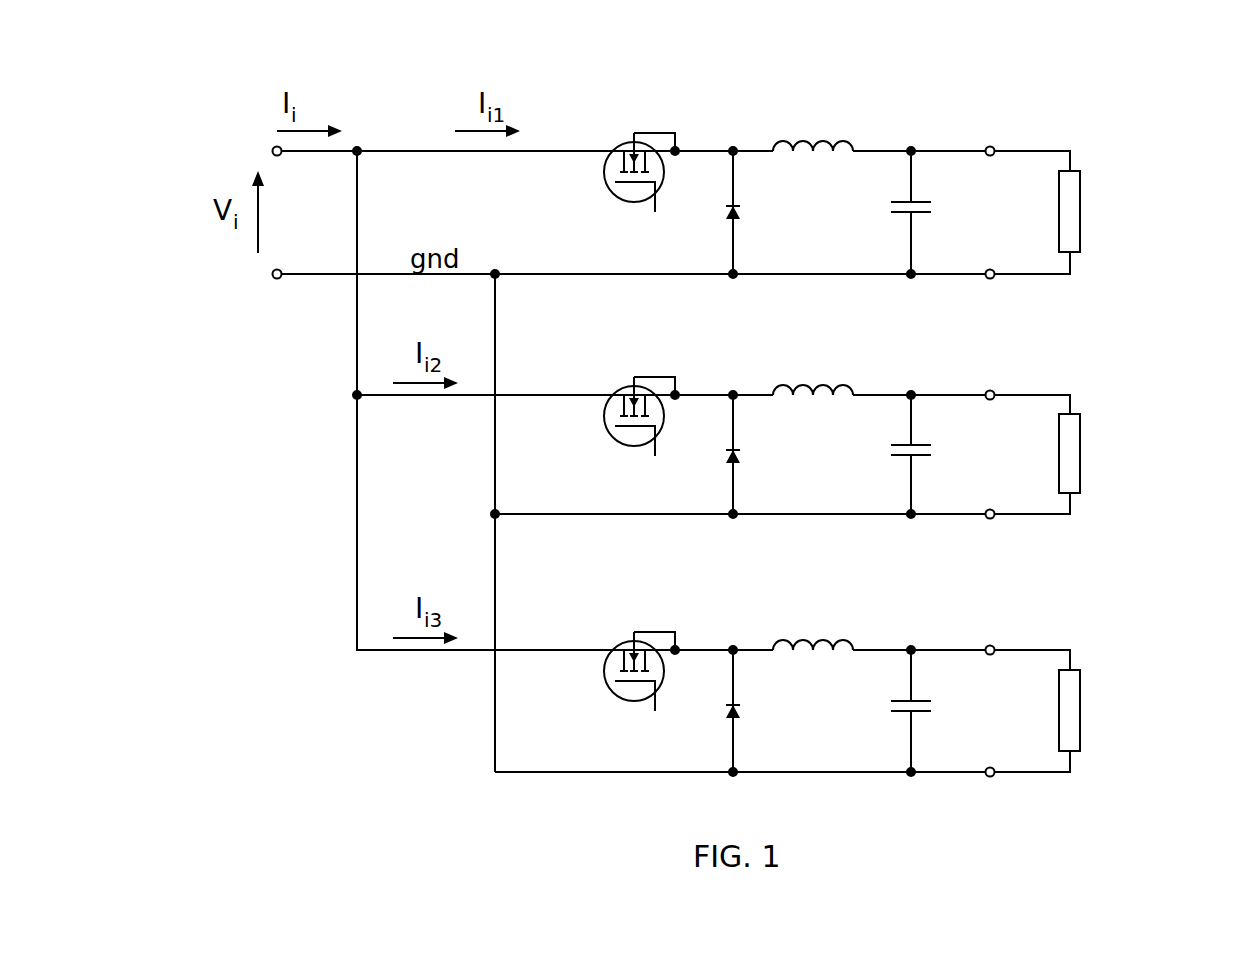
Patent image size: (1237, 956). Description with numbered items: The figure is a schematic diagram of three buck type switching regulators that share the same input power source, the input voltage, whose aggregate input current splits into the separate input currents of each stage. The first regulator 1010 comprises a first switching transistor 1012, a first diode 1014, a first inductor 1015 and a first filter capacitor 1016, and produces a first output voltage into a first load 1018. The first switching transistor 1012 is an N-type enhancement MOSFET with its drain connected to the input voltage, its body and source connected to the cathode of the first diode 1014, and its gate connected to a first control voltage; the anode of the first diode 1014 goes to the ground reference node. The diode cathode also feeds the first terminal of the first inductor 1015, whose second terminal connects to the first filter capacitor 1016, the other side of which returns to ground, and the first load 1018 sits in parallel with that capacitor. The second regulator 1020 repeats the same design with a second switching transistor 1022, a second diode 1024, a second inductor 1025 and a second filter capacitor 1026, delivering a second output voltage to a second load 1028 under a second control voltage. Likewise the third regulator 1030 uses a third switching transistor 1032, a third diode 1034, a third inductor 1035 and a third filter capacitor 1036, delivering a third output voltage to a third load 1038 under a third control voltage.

The first regulator 1010 is at (984, 80).
The switching transistor S1 1012 is at (616, 129).
The diode 1014 is at (742, 212).
The inductor L1 1015 is at (851, 131).
The filter capacitor C1 1016 is at (930, 212).
The load LOAD1 1018 is at (1088, 168).
The second regulator 1020 is at (1014, 324).
The switching transistor S2 1022 is at (616, 373).
The diode 1024 is at (742, 456).
The inductor L2 1025 is at (851, 375).
The filter capacitor C2 1026 is at (930, 456).
The load LOAD2 1028 is at (1088, 412).
The third regulator 1030 is at (1014, 578).
The switching transistor S3 1032 is at (616, 628).
The diode 1034 is at (742, 711).
The inductor L3 1035 is at (851, 631).
The filter capacitor C3 1036 is at (930, 711).
The load LOAD3 1038 is at (1088, 668).